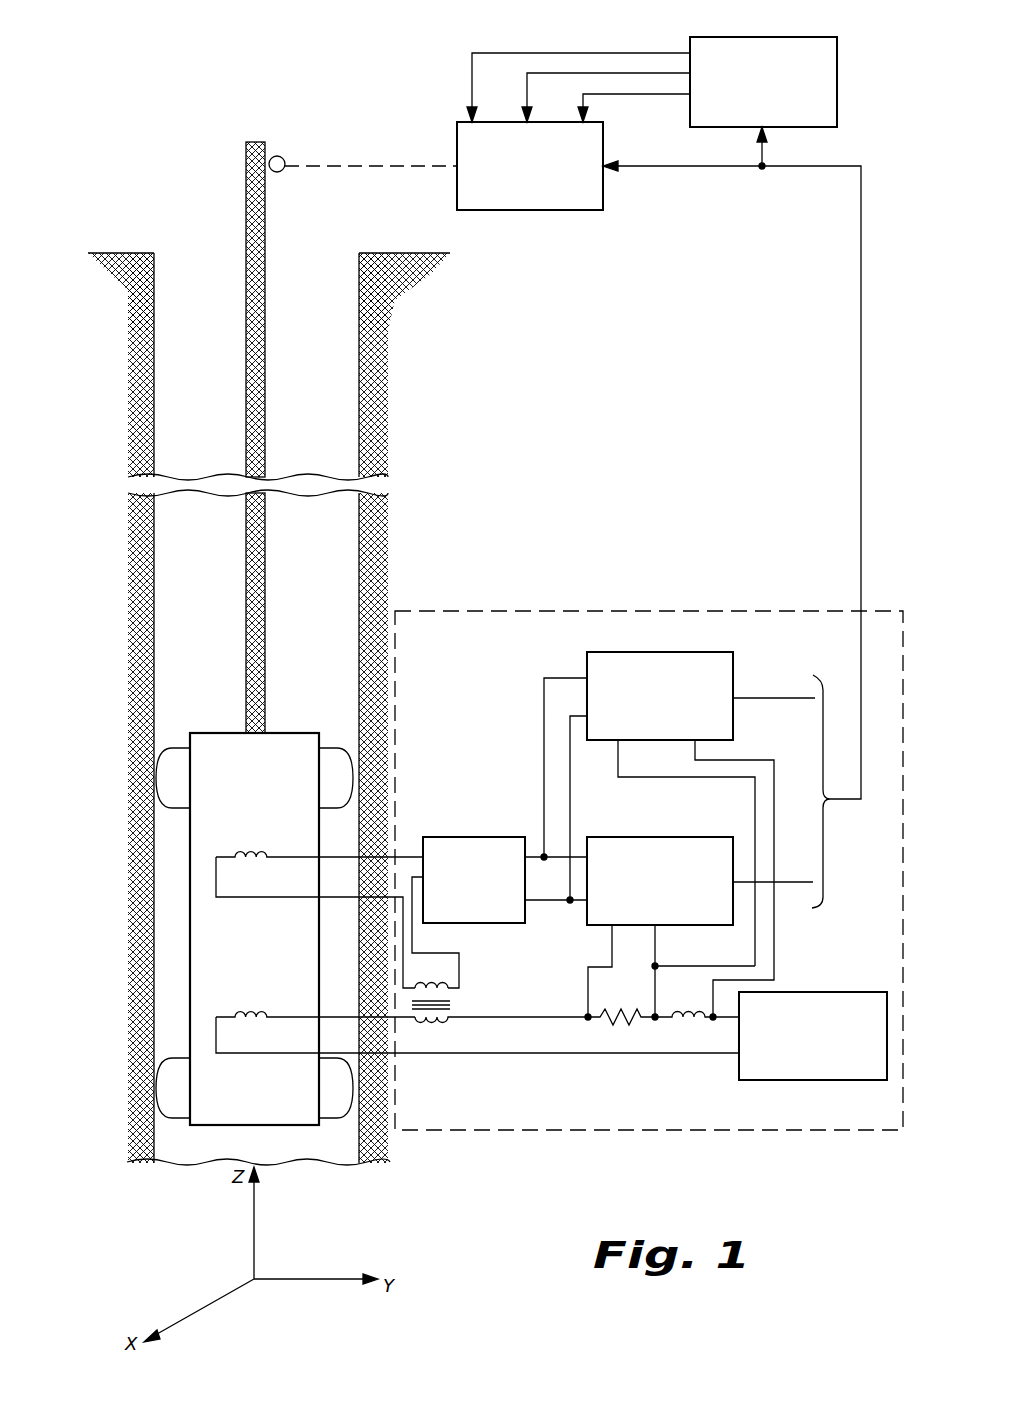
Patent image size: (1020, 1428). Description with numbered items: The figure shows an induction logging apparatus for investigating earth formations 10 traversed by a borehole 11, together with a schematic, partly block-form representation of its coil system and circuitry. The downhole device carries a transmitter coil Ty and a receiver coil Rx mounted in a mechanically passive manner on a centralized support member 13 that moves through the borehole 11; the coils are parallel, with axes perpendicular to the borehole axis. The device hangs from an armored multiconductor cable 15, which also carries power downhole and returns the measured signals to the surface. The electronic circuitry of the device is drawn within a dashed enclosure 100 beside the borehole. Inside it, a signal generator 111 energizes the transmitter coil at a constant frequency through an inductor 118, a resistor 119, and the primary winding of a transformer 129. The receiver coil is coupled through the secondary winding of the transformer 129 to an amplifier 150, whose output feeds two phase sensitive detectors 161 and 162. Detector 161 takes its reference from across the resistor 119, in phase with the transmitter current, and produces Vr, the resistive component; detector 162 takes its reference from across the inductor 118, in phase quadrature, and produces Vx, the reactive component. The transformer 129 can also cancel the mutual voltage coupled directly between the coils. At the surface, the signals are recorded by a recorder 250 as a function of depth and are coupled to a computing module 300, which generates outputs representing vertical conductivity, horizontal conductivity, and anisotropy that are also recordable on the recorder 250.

The earth formations 10 is at (123, 302).
The borehole 11 is at (203, 290).
The centralized support member 13 is at (288, 738).
The armored multiconductor cable 15 is at (246, 200).
The dashed enclosure 100 is at (545, 1145).
The signal generator 111 is at (813, 1081).
The inductor 118 is at (686, 1023).
The resistor 119 is at (622, 1026).
The transformer 129 is at (452, 1003).
The amplifier 150 is at (460, 838).
The phase sensitive detector 161 is at (588, 918).
The phase sensitive detector 162 is at (628, 656).
The recorder 250 is at (526, 206).
The computing module 300 is at (741, 41).